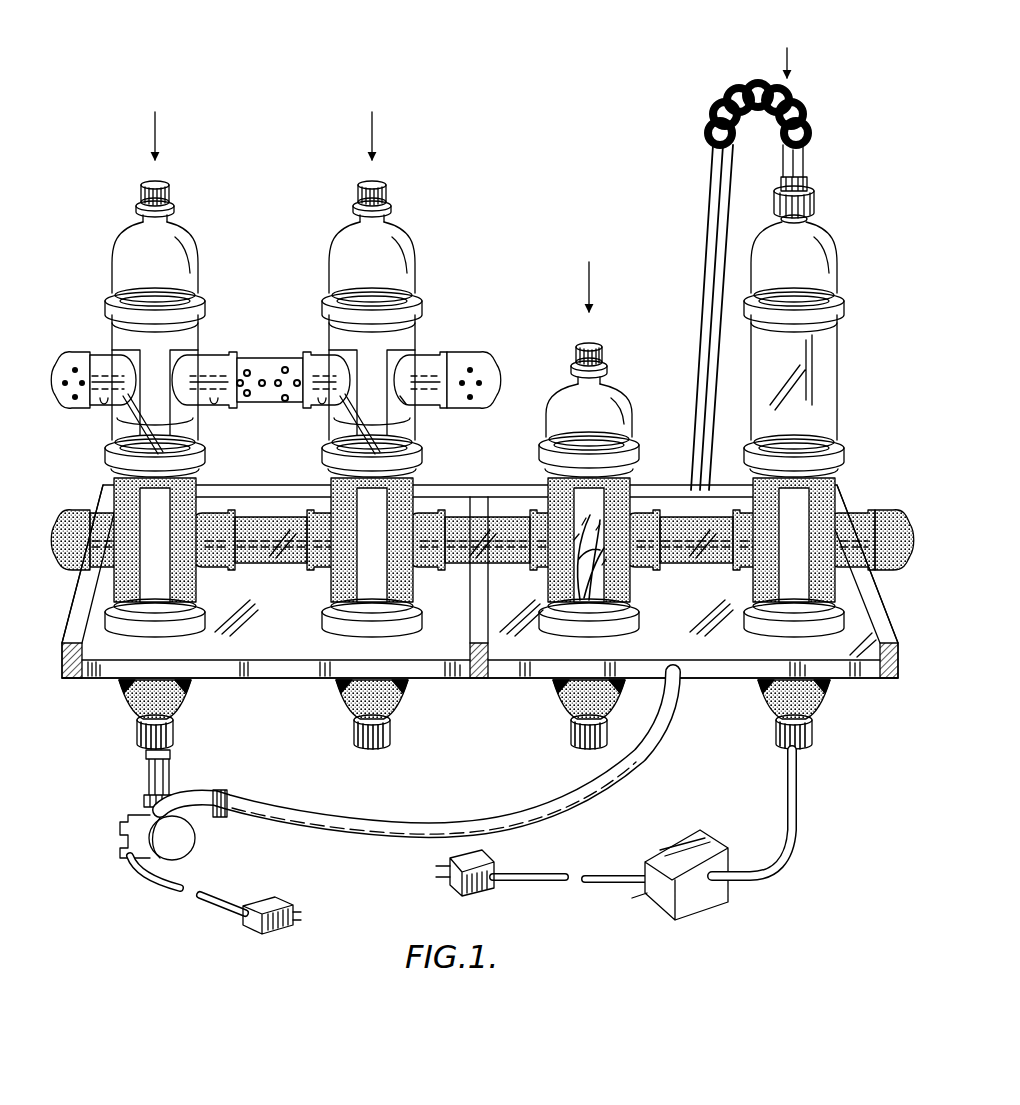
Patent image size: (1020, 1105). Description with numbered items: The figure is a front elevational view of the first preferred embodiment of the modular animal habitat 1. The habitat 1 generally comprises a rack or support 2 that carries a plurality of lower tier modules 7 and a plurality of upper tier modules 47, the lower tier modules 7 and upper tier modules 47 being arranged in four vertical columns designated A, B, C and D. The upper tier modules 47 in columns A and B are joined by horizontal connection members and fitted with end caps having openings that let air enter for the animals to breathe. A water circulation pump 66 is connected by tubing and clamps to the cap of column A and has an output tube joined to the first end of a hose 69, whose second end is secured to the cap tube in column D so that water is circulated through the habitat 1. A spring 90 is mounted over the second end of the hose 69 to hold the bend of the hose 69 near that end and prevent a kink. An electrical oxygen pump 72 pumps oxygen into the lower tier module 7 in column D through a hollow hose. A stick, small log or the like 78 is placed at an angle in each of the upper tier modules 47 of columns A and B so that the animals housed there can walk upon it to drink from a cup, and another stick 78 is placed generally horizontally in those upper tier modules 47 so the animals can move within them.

The modular animal habitat 1 is at (360, 845).
The rack or support 2 is at (300, 684).
The lower tier modules 7 is at (866, 503).
The upper tier modules 47 is at (65, 345).
The water circulation pump 66 is at (176, 848).
The hose 69 is at (648, 763).
The oxygen pump 72 is at (675, 845).
The stick, small log or the like 78 is at (122, 423).
The spring 90 is at (735, 72).